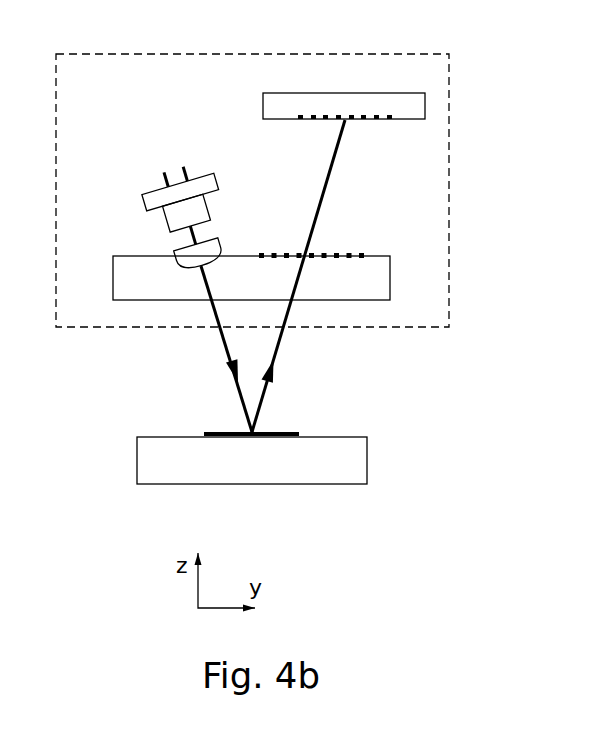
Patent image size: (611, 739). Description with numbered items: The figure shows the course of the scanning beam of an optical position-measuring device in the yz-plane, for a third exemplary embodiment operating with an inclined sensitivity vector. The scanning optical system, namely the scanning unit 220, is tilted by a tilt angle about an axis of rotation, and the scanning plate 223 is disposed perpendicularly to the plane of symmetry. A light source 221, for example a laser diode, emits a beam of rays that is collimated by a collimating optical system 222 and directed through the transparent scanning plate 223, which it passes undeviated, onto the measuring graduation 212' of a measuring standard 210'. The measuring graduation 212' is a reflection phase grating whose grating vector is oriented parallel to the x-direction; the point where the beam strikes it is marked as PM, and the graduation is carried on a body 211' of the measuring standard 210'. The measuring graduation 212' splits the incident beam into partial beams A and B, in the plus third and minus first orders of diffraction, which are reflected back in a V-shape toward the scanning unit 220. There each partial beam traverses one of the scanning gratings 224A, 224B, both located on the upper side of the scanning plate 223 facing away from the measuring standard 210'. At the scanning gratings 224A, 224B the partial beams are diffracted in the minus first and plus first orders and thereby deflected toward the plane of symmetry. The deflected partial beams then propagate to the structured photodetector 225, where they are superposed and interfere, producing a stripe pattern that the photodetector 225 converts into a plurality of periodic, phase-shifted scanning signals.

The scanning unit 220 is at (486, 196).
The light source 221 is at (143, 200).
The collimating optical system 222 is at (222, 246).
The scanning plate 223 is at (128, 290).
The scanning grating 224A is at (347, 254).
The scanning grating 224B is at (462, 270).
The structured photodetector 225 is at (425, 105).
The measuring graduation 212' is at (213, 414).
The measurement point PM is at (258, 428).
The carrier body 211' is at (252, 493).
The measuring standard 210' is at (131, 531).